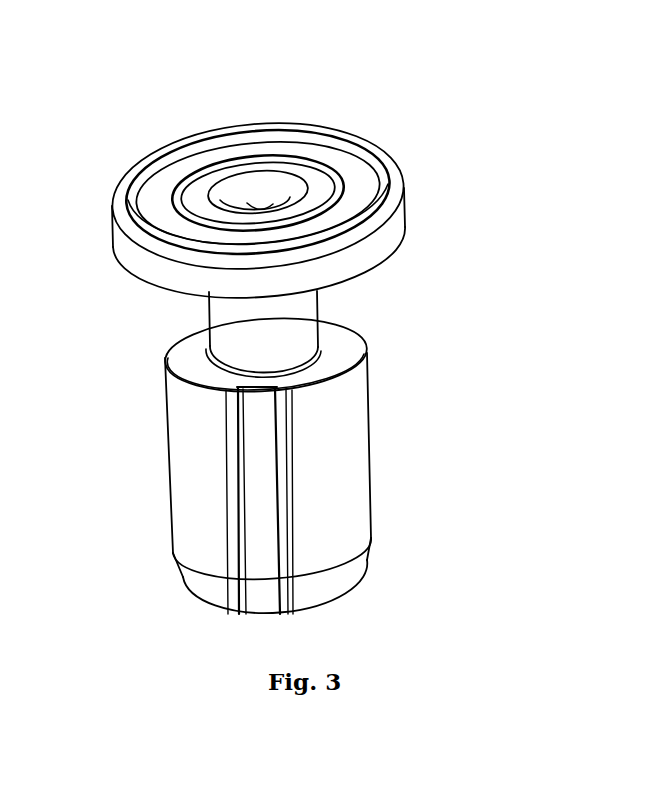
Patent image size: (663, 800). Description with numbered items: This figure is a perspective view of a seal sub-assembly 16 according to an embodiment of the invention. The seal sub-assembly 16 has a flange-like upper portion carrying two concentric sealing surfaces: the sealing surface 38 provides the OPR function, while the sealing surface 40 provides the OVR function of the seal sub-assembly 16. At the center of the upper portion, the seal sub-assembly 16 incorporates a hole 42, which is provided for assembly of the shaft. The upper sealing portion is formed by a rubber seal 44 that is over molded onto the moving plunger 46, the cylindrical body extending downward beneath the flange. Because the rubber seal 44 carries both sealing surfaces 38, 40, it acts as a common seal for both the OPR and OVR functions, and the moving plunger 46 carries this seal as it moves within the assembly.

The seal sub-assembly 16 is at (322, 323).
The sealing surface 38 is at (316, 187).
The sealing surface 40 is at (186, 145).
The hole 42 is at (257, 205).
The rubber seal 44 is at (251, 200).
The moving plunger 46 is at (330, 463).